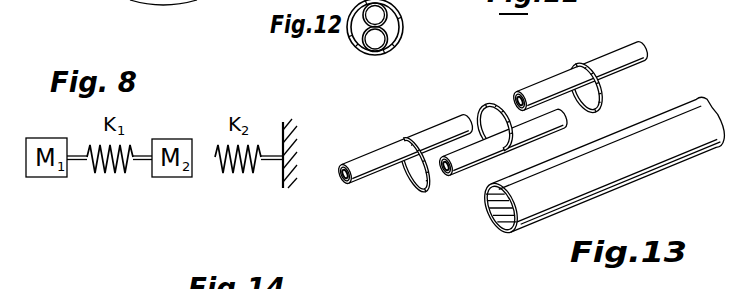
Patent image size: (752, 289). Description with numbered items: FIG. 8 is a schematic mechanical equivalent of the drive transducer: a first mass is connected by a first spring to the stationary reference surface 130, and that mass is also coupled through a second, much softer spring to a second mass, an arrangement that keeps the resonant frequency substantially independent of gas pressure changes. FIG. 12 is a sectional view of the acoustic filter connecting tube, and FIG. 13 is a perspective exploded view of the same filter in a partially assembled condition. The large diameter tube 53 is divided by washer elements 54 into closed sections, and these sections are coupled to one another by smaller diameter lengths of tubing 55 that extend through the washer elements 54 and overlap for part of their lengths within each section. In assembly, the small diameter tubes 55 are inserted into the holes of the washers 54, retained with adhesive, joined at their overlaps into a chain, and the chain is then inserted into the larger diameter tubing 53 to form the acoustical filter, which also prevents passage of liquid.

In FIG. 8, the stationary reference surface 130 is at (282, 181).
In FIG. 13, the large diameter tube 53 is at (654, 117).
In FIG. 13, the washer element 54 is at (417, 189).
In FIG. 13, the small diameter tube 55 is at (368, 154).